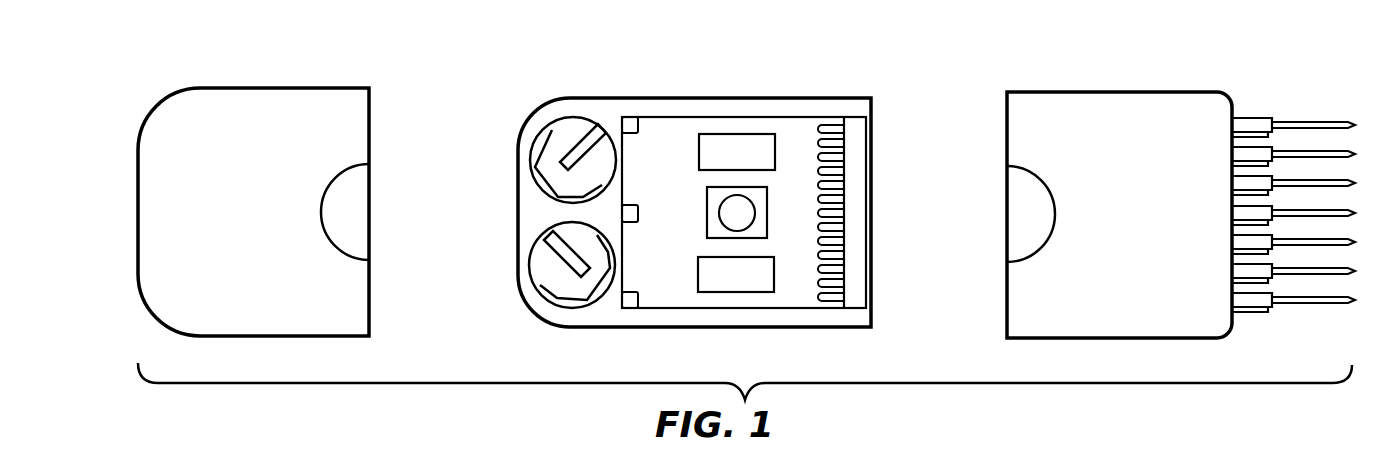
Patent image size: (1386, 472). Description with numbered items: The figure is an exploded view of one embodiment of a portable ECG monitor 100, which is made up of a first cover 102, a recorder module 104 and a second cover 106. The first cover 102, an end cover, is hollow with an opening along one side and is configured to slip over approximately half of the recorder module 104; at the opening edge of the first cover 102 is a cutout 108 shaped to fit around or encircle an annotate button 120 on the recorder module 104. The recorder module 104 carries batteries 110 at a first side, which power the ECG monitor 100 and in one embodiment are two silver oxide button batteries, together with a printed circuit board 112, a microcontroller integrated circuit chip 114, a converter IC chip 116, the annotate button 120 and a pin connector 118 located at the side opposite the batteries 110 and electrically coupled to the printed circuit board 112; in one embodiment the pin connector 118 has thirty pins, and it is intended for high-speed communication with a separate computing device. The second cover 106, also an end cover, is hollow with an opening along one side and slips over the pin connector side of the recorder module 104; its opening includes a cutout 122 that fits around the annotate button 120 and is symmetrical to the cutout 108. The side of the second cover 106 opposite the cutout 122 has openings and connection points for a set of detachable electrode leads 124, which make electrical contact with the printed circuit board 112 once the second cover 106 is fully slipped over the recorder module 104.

The portable ECG monitor 100 is at (844, 52).
The first cover 102 is at (369, 117).
The recorder module 104 is at (516, 262).
The second cover 106 is at (1007, 112).
The cutout 108 is at (357, 208).
The batteries 110 is at (547, 147).
The printed circuit board 112 is at (793, 128).
The microcontroller integrated circuit chip 114 is at (723, 134).
The converter IC chip 116 is at (732, 292).
The pin connector 118 is at (858, 185).
The annotate button 120 is at (737, 231).
The cutout 122 is at (1023, 262).
The electrode leads 124 is at (1342, 177).